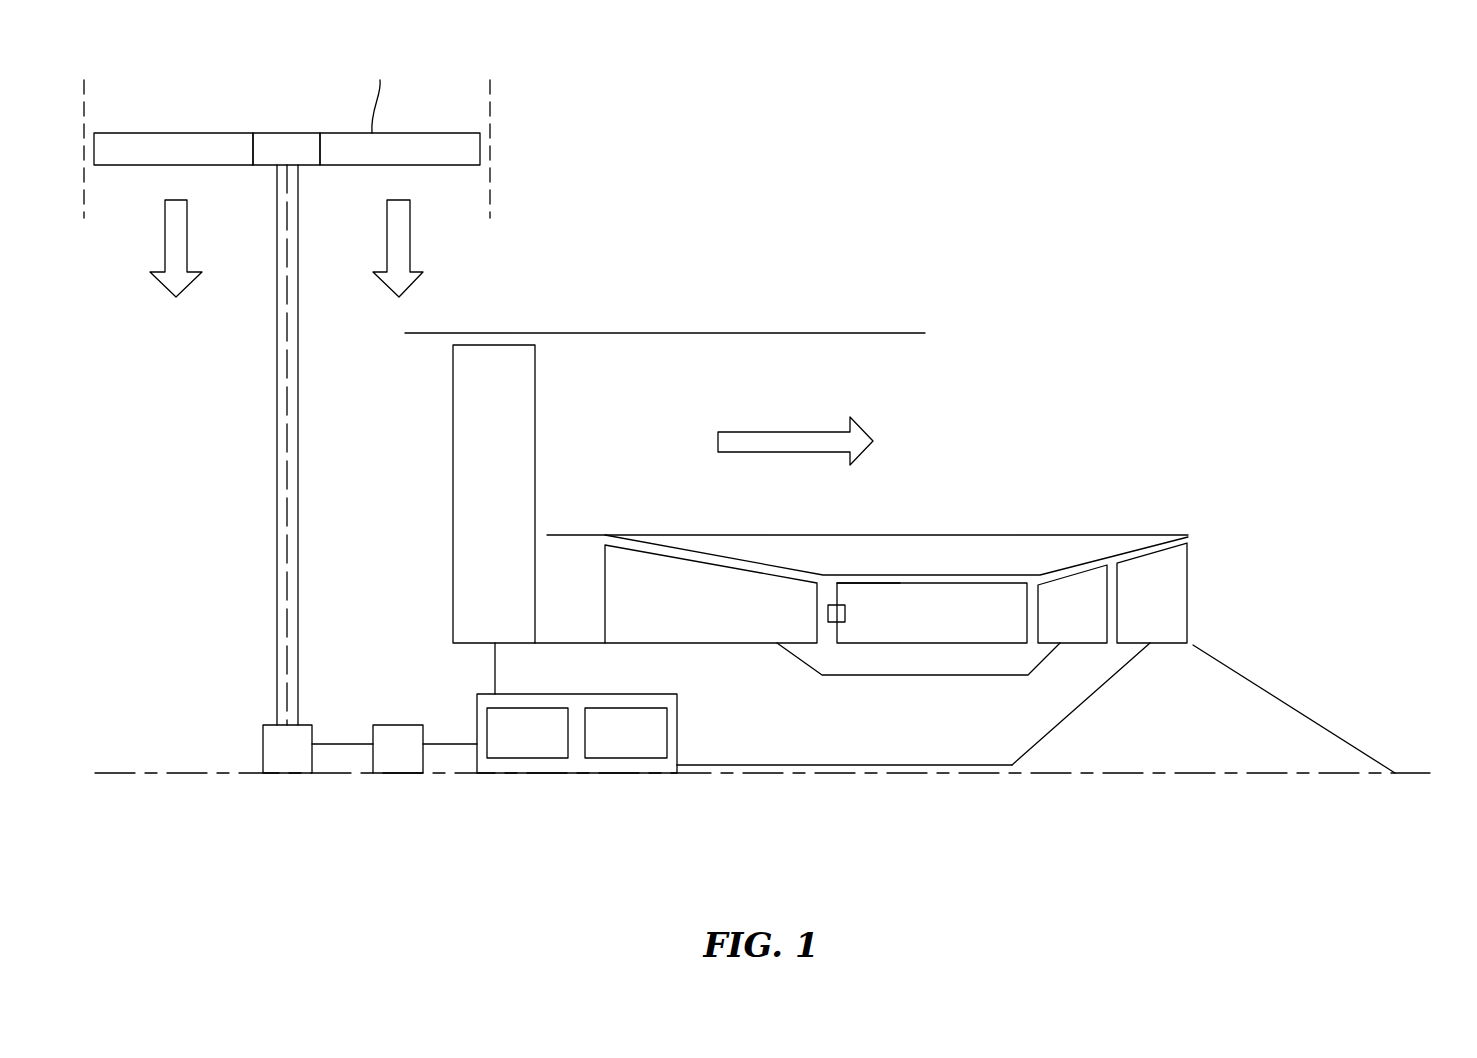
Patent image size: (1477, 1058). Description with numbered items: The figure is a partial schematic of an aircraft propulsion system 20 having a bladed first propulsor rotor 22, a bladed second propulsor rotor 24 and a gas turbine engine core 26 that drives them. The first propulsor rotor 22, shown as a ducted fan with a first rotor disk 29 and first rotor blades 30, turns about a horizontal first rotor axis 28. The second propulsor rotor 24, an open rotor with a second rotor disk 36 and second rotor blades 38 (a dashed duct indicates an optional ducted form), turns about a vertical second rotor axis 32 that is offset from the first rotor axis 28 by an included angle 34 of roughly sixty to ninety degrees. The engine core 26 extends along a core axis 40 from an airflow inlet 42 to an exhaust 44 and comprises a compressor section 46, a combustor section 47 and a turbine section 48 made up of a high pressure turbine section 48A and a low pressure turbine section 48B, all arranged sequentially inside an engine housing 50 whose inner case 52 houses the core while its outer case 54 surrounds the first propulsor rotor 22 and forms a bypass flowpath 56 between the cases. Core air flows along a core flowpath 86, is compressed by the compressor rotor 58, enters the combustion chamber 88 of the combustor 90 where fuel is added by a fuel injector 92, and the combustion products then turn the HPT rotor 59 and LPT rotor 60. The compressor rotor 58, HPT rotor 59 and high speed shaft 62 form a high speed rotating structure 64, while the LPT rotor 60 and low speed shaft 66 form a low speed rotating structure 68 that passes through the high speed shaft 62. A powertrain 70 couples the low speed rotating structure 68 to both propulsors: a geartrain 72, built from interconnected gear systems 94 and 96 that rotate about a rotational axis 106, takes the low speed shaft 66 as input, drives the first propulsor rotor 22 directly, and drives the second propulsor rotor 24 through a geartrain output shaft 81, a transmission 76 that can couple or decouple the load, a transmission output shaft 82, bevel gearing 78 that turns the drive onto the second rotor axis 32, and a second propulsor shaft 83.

The aircraft propulsion system 20 is at (1173, 193).
The first propulsor rotor 22 is at (477, 494).
The second propulsor rotor 24 is at (287, 170).
The gas turbine engine core 26 is at (978, 633).
The first rotor axis 28 is at (765, 819).
The first rotor disk 29 is at (495, 680).
The first rotor blades 30 is at (453, 475).
The second rotor axis 32 is at (243, 445).
The included angle 34 is at (285, 637).
The second rotor disk 36 is at (288, 133).
The second rotor blades 38 is at (176, 133).
The core axis 40 is at (765, 819).
The airflow inlet 42 is at (547, 575).
The exhaust 44 is at (1205, 607).
The compressor section 46 is at (730, 560).
The combustor section 47 is at (955, 575).
The turbine section 48 is at (1104, 524).
The high pressure turbine section 48A is at (1070, 573).
The low pressure turbine section 48B is at (1147, 556).
The engine housing 50 is at (796, 376).
The inner case 52 is at (898, 533).
The outer case 54 is at (707, 333).
The bypass flowpath 56 is at (633, 413).
The compressor rotor 58 is at (762, 645).
The HPT rotor 59 is at (1075, 645).
The LPT rotor 60 is at (1165, 645).
The high speed shaft 62 is at (920, 677).
The high speed rotating structure 64 is at (820, 680).
The low speed shaft 66 is at (887, 767).
The low speed rotating structure 68 is at (990, 770).
The powertrain 70 is at (470, 806).
The geartrain 72 is at (577, 783).
The transmission 76 is at (386, 761).
The gearing 78 is at (276, 761).
The geartrain output shaft 81 is at (437, 745).
The transmission output shaft 82 is at (340, 745).
The second propulsor shaft 83 is at (276, 527).
The core flowpath 86 is at (563, 611).
The combustion chamber 88 is at (973, 630).
The combustor 90 is at (868, 583).
The fuel injector 92 is at (847, 614).
The first gear system 94 is at (614, 743).
The second gear system 96 is at (516, 743).
The rotational axis 106 is at (1417, 778).